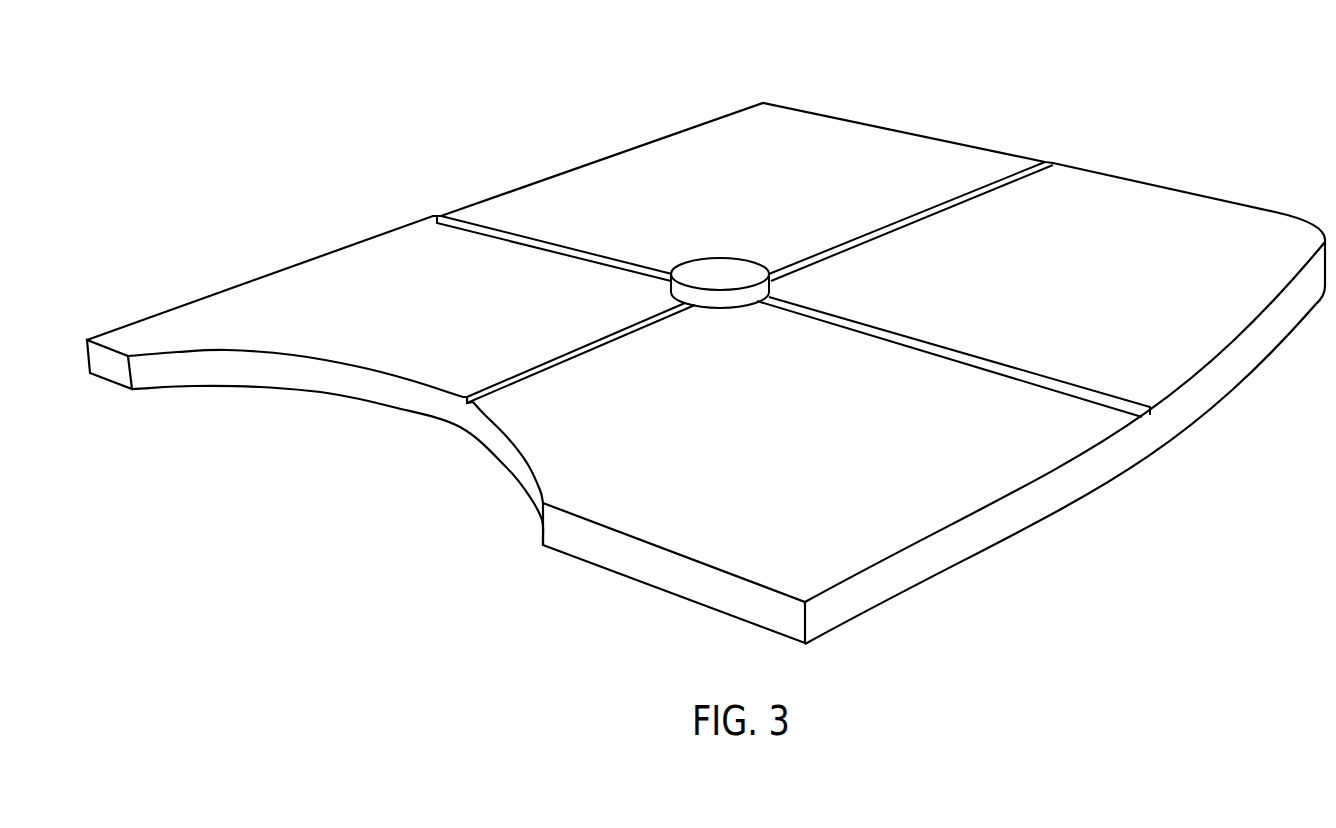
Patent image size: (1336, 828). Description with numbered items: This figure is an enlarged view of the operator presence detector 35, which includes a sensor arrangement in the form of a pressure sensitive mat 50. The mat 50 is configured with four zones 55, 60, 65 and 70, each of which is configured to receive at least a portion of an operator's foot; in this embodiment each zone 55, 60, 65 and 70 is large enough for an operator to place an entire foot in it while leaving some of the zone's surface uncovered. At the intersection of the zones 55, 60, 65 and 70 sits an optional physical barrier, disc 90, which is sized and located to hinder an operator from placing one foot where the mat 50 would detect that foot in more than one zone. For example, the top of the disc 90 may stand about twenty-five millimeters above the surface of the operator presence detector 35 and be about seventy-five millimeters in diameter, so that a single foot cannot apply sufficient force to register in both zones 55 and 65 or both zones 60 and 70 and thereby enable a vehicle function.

The operator presence detector 35 is at (474, 125).
The pressure sensitive mat 50 is at (681, 131).
The zone 55 is at (317, 277).
The zone 60 is at (873, 138).
The zone 65 is at (1150, 202).
The zone 70 is at (702, 545).
The disc 90 is at (703, 270).